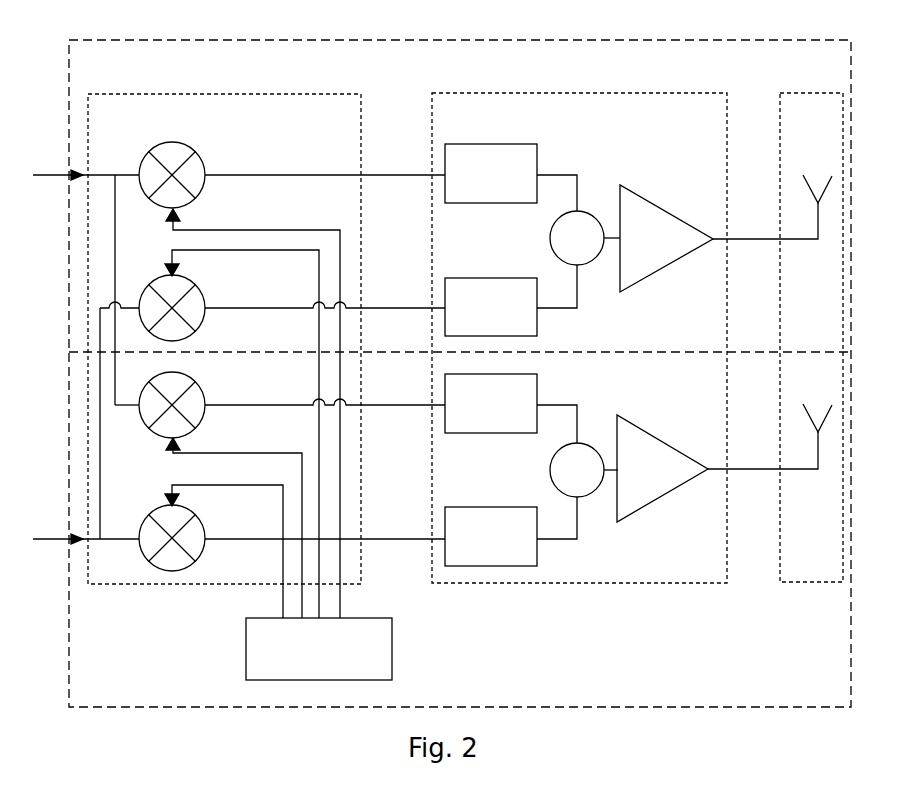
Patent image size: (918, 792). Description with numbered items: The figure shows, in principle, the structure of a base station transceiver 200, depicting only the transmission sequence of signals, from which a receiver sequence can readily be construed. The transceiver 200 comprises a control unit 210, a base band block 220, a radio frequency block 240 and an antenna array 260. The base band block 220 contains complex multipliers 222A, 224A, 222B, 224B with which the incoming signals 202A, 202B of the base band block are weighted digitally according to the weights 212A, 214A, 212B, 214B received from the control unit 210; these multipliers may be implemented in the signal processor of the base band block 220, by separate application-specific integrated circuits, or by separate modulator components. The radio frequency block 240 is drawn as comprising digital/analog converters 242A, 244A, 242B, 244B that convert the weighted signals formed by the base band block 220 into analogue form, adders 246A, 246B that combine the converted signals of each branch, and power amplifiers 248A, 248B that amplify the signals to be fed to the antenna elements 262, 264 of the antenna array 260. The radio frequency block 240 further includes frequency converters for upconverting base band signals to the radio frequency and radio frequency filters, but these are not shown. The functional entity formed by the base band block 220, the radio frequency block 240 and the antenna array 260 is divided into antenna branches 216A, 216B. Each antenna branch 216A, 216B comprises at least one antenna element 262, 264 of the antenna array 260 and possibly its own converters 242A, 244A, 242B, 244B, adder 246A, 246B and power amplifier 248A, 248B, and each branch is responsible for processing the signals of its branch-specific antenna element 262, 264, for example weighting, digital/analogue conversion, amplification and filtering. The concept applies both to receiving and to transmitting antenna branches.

The transceiver 200 is at (120, 40).
The control unit 210 is at (246, 678).
The base band block 220 is at (133, 94).
The radio frequency block 240 is at (480, 93).
The antenna array 260 is at (780, 557).
The signal 202A is at (35, 173).
The signal 202B is at (38, 537).
The antenna branch 216A is at (68, 247).
The antenna branch 216B is at (68, 461).
The complex multiplier 222A is at (205, 150).
The complex multiplier 224A is at (200, 330).
The complex multiplier 222B is at (205, 384).
The complex multiplier 224B is at (200, 564).
The weight 212A is at (213, 230).
The weight 214A is at (210, 250).
The weight 212B is at (205, 453).
The weight 214B is at (195, 488).
The digital/analog converter 242A is at (537, 152).
The digital/analog converter 244A is at (537, 328).
The digital/analog converter 242B is at (537, 382).
The digital/analog converter 244B is at (537, 558).
The adder 246A is at (550, 239).
The adder 246B is at (550, 471).
The power amplifier 248A is at (630, 192).
The power amplifier 248B is at (627, 423).
The antenna element 262 is at (830, 178).
The antenna element 264 is at (830, 407).